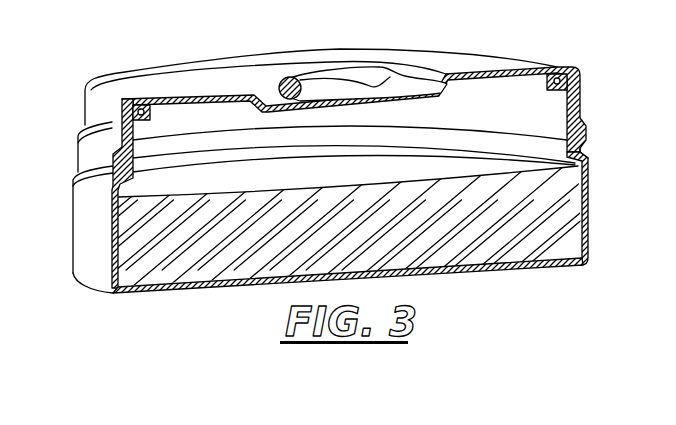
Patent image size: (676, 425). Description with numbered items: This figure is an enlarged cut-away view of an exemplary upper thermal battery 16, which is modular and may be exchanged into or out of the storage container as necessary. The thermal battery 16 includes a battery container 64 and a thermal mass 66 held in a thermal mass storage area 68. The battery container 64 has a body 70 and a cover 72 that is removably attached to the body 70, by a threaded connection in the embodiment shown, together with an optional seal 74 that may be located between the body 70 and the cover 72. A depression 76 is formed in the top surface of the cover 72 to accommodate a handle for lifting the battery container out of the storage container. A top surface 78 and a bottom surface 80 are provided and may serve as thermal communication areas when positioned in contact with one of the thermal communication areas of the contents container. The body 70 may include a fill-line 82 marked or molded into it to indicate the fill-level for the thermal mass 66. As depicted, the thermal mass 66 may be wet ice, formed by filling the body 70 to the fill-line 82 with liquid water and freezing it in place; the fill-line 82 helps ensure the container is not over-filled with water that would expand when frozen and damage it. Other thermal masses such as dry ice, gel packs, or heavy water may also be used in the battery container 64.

The upper thermal battery 16 is at (598, 47).
The battery container 64 is at (590, 160).
The thermal mass 66 is at (552, 228).
The thermal mass storage area 68 is at (540, 116).
The body 70 is at (589, 199).
The cover 72 is at (552, 72).
The seal 74 is at (138, 108).
The depression 76 is at (243, 75).
The top surface 78 is at (167, 73).
The bottom surface 80 is at (178, 290).
The fill-line 82 is at (458, 158).